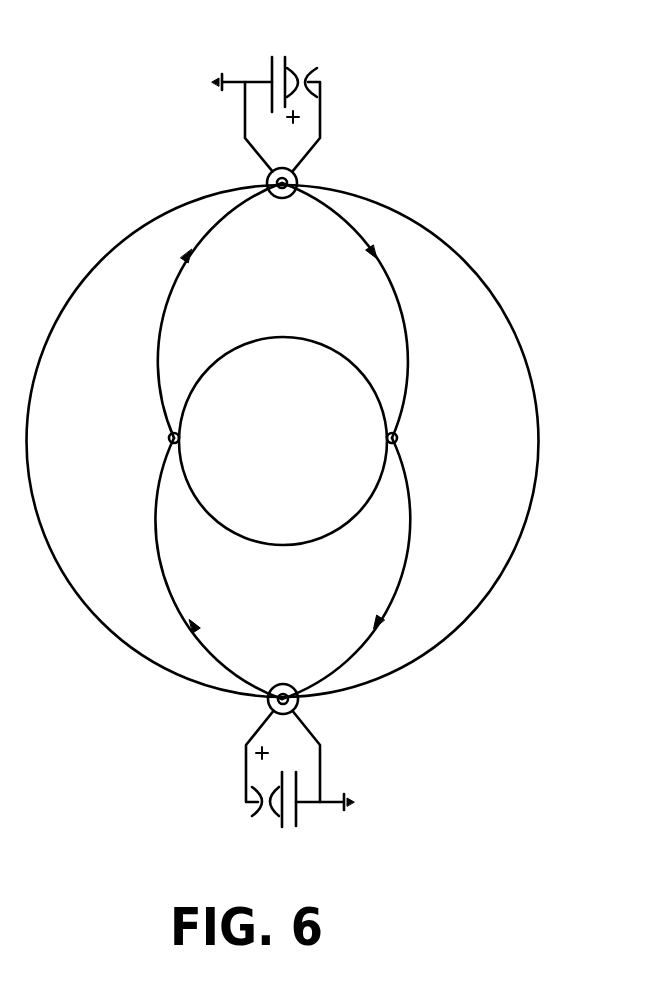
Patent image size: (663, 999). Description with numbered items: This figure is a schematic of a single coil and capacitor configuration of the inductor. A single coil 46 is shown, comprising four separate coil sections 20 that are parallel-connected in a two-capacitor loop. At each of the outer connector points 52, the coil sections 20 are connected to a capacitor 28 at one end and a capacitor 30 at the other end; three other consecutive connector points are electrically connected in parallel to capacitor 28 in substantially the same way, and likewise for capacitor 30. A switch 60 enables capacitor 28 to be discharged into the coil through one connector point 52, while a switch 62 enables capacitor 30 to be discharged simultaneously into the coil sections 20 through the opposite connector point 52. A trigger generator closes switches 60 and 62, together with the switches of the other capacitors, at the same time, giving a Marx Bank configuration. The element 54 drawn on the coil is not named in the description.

The coil section 20 is at (163, 333).
The capacitor 28 is at (270, 72).
The capacitor 30 is at (297, 812).
The single coil 46 is at (410, 476).
The outer connector point 52 is at (284, 182).
The electrode 54 is at (168, 441).
The switch 60 is at (306, 82).
The switch 62 is at (253, 811).